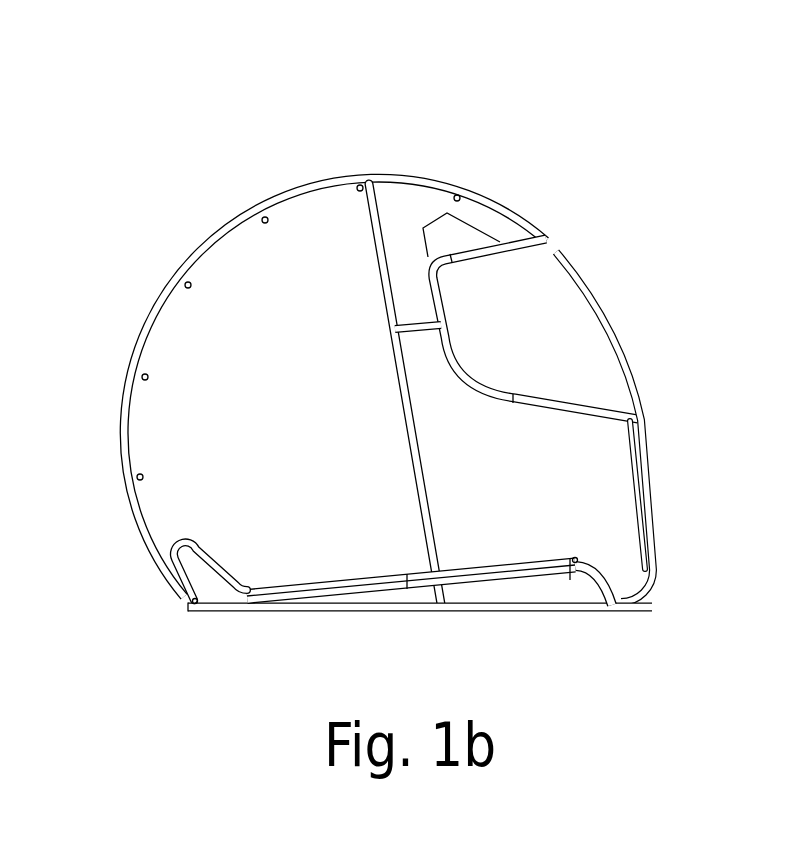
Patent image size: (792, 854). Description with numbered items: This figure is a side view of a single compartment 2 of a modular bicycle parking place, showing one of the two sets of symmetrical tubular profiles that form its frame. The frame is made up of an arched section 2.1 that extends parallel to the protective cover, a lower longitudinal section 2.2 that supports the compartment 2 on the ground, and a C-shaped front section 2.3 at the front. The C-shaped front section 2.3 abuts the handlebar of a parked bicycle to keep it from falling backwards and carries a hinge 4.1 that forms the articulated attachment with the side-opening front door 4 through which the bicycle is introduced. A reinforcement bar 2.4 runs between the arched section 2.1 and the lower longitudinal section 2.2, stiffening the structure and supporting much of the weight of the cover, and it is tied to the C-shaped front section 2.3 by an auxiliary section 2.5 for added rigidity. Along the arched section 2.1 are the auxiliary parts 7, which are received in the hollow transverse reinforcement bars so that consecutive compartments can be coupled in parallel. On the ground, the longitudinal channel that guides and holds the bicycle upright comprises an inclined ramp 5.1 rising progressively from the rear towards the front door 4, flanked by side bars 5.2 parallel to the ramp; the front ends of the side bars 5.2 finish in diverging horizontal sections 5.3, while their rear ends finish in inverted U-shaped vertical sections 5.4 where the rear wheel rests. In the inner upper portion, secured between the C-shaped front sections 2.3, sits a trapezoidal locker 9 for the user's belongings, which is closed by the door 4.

The compartment 2 is at (497, 148).
The arched section 2.1 is at (221, 238).
The lower longitudinal section 2.2 is at (382, 606).
The C-shaped front section 2.3 is at (450, 345).
The reinforcement bar 2.4 is at (373, 227).
The auxiliary section 2.5 is at (418, 323).
The front door 4 is at (596, 307).
The hinge 4.1 is at (648, 535).
The inclined ramp 5.1 is at (528, 592).
The side bars 5.2 is at (330, 584).
The diverging horizontal sections 5.3 is at (608, 586).
The inverted U-shaped vertical sections 5.4 is at (178, 557).
The auxiliary parts 7 is at (185, 288).
The locker 9 is at (457, 235).